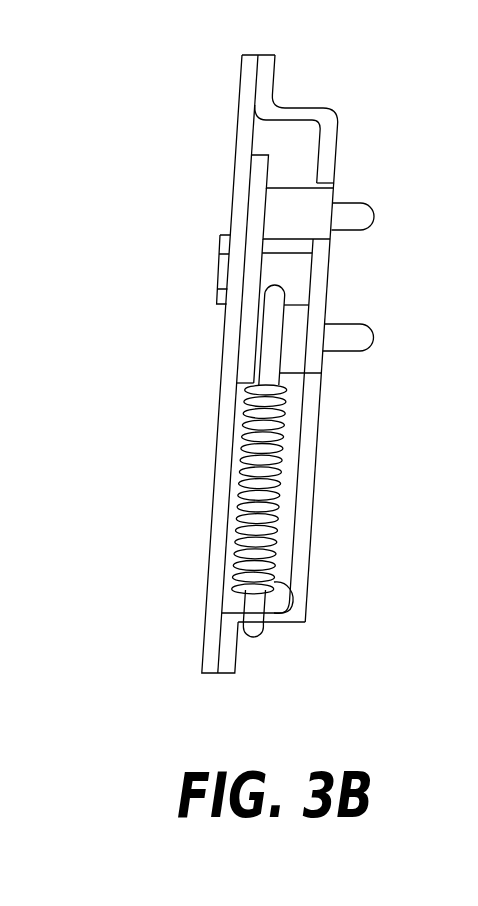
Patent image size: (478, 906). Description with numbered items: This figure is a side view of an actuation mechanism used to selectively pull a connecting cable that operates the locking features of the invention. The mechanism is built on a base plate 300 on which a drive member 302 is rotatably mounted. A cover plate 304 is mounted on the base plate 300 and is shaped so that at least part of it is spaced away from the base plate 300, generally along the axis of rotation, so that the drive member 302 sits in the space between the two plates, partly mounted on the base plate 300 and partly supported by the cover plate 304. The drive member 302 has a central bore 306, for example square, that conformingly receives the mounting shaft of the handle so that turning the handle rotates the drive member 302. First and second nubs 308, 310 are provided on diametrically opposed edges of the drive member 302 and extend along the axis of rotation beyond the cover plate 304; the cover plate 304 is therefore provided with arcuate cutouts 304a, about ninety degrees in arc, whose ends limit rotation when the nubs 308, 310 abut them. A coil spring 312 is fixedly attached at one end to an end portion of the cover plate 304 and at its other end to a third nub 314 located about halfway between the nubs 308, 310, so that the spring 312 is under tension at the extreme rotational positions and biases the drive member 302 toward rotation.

The base plate 300 is at (242, 182).
The drive member 302 is at (258, 203).
The cover plate 304 is at (305, 537).
The arcuate cutouts 304a is at (322, 298).
The central bore 306 is at (290, 253).
The first nub 308 is at (350, 338).
The second nub 310 is at (356, 212).
The coil spring 312 is at (295, 585).
The third nub 314 is at (300, 327).